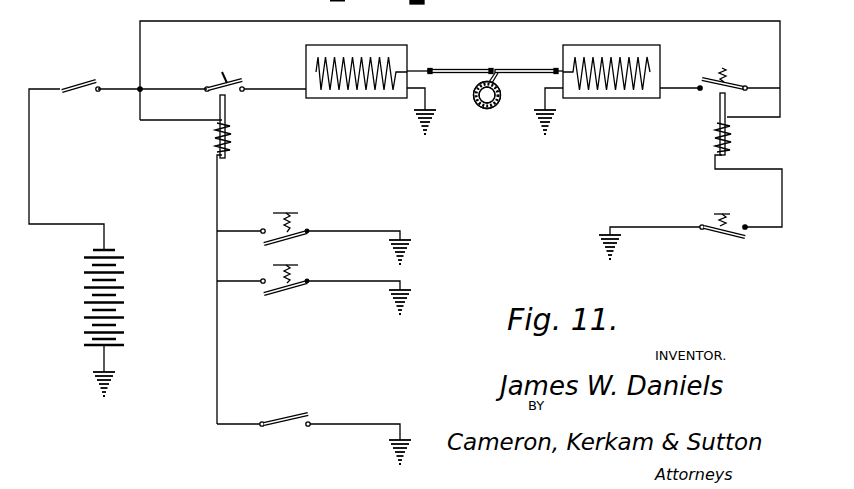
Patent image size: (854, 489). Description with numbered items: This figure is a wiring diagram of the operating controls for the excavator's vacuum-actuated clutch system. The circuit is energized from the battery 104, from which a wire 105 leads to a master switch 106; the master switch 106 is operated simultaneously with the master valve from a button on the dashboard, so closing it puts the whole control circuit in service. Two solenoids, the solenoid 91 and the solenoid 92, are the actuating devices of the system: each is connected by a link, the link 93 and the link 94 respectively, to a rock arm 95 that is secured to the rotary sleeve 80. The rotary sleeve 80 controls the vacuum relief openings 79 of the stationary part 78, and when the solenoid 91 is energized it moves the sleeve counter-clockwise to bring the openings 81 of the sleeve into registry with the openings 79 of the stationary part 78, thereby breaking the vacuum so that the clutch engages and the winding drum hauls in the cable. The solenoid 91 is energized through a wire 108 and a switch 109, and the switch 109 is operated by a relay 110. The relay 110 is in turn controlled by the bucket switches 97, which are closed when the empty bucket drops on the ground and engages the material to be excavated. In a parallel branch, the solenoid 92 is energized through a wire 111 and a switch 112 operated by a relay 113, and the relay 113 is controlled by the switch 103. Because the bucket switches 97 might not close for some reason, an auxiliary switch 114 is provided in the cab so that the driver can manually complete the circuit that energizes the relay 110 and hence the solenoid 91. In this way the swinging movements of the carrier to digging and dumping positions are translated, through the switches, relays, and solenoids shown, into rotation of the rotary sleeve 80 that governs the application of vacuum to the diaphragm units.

The stationary part 78 is at (485, 110).
The vacuum relief openings 79 is at (478, 94).
The rotary sleeve 80 is at (495, 108).
The openings of the sleeve 81 is at (500, 93).
The solenoid 91 is at (380, 98).
The solenoid 92 is at (637, 98).
The link 93 is at (441, 67).
The link 94 is at (533, 66).
The rock arm 95 is at (494, 68).
The bucket switch 97 is at (300, 228).
The switch 103 is at (731, 238).
The battery 104 is at (124, 302).
The wire 105 is at (31, 203).
The master switch 106 is at (74, 88).
The wire 108 is at (190, 72).
The switch 109 is at (244, 80).
The relay 110 is at (233, 148).
The wire 111 is at (677, 18).
The switch 112 is at (727, 82).
The relay 113 is at (722, 120).
The auxiliary switch 114 is at (296, 400).